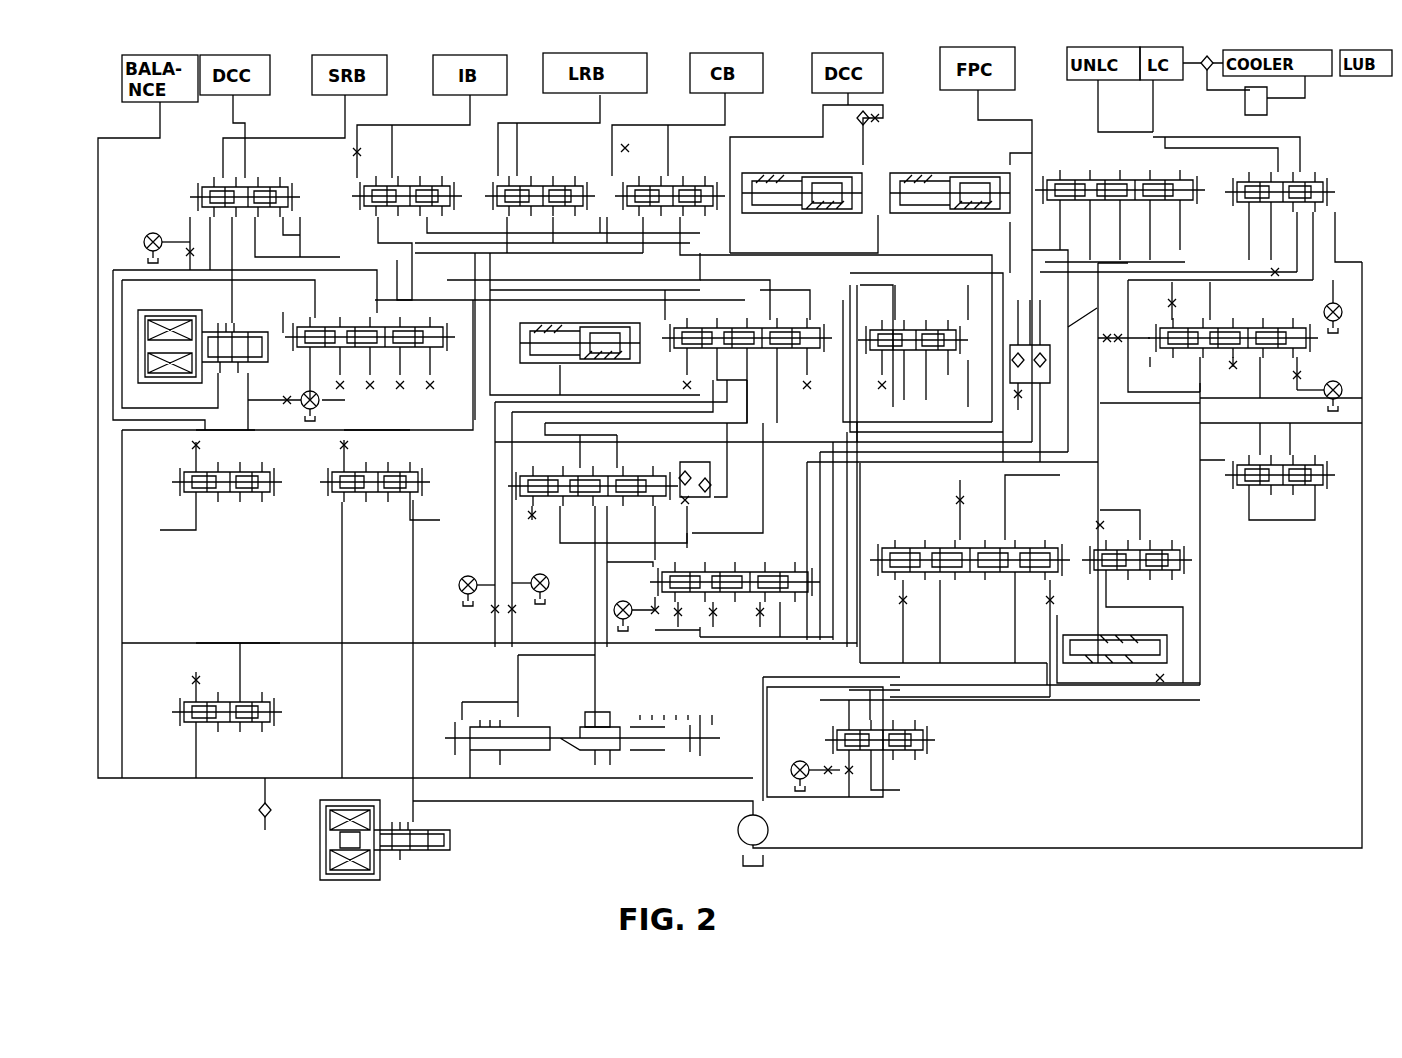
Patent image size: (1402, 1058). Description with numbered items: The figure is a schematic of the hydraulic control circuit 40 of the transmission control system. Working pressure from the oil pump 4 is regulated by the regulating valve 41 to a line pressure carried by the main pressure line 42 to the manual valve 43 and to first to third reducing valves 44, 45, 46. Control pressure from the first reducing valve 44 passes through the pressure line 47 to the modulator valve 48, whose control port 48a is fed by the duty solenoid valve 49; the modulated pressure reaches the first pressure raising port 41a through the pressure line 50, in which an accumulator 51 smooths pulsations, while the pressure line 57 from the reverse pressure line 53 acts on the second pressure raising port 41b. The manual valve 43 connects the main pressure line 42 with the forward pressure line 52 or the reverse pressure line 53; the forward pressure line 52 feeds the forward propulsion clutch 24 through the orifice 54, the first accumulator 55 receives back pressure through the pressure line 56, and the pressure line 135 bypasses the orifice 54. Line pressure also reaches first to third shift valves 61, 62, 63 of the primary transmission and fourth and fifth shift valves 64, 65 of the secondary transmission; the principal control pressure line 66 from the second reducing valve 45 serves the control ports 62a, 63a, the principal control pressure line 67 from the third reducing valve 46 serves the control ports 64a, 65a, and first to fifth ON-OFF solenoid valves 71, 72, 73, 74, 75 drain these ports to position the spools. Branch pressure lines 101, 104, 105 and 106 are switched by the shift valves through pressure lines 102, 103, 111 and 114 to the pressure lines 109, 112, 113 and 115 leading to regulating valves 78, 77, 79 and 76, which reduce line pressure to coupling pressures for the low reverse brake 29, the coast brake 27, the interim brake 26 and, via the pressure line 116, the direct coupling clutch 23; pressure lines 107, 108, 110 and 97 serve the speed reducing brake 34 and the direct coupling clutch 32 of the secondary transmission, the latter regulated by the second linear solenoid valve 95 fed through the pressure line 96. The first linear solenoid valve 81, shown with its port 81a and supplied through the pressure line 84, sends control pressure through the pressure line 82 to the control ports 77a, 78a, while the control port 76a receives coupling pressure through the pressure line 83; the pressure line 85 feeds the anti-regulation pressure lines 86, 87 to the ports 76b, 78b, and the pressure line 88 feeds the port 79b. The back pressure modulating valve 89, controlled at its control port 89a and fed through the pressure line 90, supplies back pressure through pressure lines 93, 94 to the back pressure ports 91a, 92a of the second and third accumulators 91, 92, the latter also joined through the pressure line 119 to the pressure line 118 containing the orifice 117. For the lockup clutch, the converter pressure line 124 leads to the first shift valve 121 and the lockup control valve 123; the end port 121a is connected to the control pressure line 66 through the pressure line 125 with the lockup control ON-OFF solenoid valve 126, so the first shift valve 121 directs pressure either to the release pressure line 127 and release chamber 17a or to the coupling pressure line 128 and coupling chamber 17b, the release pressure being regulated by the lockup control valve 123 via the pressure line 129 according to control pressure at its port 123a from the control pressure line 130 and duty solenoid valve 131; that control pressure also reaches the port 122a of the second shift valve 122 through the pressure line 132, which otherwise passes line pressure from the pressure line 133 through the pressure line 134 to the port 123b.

The oil pump 4 is at (738, 830).
The release chamber 17a is at (1110, 85).
The coupling chamber 17b is at (1165, 85).
The direct coupling clutch 23 is at (883, 83).
The forward propulsion clutch 24 is at (1015, 85).
The interim brake 26 is at (507, 85).
The coast brake 27 is at (763, 83).
The low reverse brake 29 is at (647, 83).
The direct coupling clutch 32 is at (270, 85).
The speed reducing brake 34 is at (387, 85).
The hydraulic control circuit 40 is at (140, 850).
The regulating valve 41 is at (1000, 540).
The first pressure raising port 41a is at (1050, 540).
The second pressure raising port 41b is at (1015, 540).
The main pressure line 42 is at (120, 605).
The manual valve 43 is at (550, 722).
The first reducing valve 44 is at (1150, 550).
The second reducing valve 45 is at (245, 705).
The third reducing valve 46 is at (245, 508).
The pressure line 47 is at (1075, 465).
The modulator valve 48 is at (905, 770).
The control port 48a is at (835, 722).
The duty solenoid valve 49 is at (793, 760).
The pressure line 50 is at (1047, 665).
The accumulator 51 is at (1110, 640).
The forward pressure line 52 is at (1035, 425).
The reverse pressure line 53 is at (600, 710).
The orifice 54 is at (1020, 392).
The first accumulator 55 is at (930, 175).
The pressure line 56 is at (820, 480).
The pressure line 57 is at (955, 665).
The first shift valve 61 is at (765, 565).
The second shift valve 62 is at (650, 468).
The control port 62a is at (532, 510).
The third shift valve 63 is at (795, 360).
The control port 63a is at (680, 352).
The fourth shift valve 64 is at (435, 360).
The control port 64a is at (295, 313).
The fifth shift valve 65 is at (290, 185).
The control port 65a is at (200, 197).
The principal control pressure line 66 is at (372, 643).
The principal control pressure line 67 is at (120, 268).
The first ON-OFF solenoid valve 71 is at (614, 610).
The second ON-OFF solenoid valve 72 is at (552, 578).
The third ON-OFF solenoid valve 73 is at (460, 578).
The fourth ON-OFF solenoid valve 74 is at (318, 410).
The fifth ON-OFF solenoid valve 75 is at (145, 232).
The regulating valve 76 is at (942, 322).
The control port 76a is at (920, 365).
The port 76b is at (955, 365).
The regulating valve 77 is at (673, 176).
The control port 77a is at (705, 188).
The regulating valve 78 is at (563, 176).
The control port 78a is at (560, 186).
The port 78b is at (585, 188).
The regulating valve 79 is at (432, 178).
The port 79b is at (465, 188).
The first linear solenoid valve 81 is at (450, 838).
The regulator valve port 81a is at (655, 600).
The pressure line 82 is at (475, 265).
The pressure line 83 is at (915, 265).
The pressure line 84 is at (625, 801).
The pressure line 85 is at (850, 500).
The anti-regulation pressure line 86 is at (915, 418).
The anti-regulation pressure line 87 is at (598, 290).
The pressure line 88 is at (457, 233).
The back pressure modulating valve 89 is at (380, 505).
The control port 89a is at (420, 500).
The pressure line 90 is at (342, 585).
The second accumulator 91 is at (780, 175).
The back pressure port 91a is at (810, 225).
The third accumulator 92 is at (605, 328).
The back pressure port 92a is at (592, 315).
The pressure line 93 is at (750, 253).
The pressure line 94 is at (570, 253).
The second linear solenoid valve 95 is at (185, 322).
The pressure line 96 is at (230, 385).
The pressure line 97 is at (232, 300).
The pressure line 101 is at (745, 615).
The pressure line 102 is at (625, 545).
The pressure line 103 is at (545, 435).
The pressure line 104 is at (630, 555).
The pressure line 105 is at (700, 615).
The pressure line 106 is at (353, 420).
The pressure line 107 is at (340, 310).
The pressure line 108 is at (305, 138).
The pressure line 109 is at (650, 292).
The pressure line 110 is at (233, 124).
The pressure line 111 is at (763, 512).
The pressure line 112 is at (780, 288).
The pressure line 113 is at (378, 238).
The pressure line 114 is at (715, 528).
The pressure line 115 is at (830, 408).
The pressure line 116 is at (845, 255).
The orifice 117 is at (712, 482).
The pressure line 118 is at (735, 460).
The pressure line 119 is at (580, 395).
The first shift valve 121 is at (1260, 205).
The end port 121a is at (1318, 178).
The second shift valve 122 is at (1160, 180).
The port 122a is at (1200, 182).
The lockup control valve 123 is at (1250, 320).
The port 123a is at (1295, 345).
The port 123b is at (1150, 367).
The converter pressure line 124 is at (1345, 255).
The pressure line 125 is at (1268, 272).
The lockup control ON-OFF solenoid valve 126 is at (1322, 312).
The release pressure line 127 is at (1285, 132).
The coupling pressure line 128 is at (1210, 148).
The pressure line 129 is at (1240, 272).
The control pressure line 130 is at (1135, 405).
The duty solenoid valve 131 is at (1318, 400).
The pressure line 132 is at (1068, 327).
The pressure line 133 is at (1060, 235).
The pressure line 134 is at (1155, 312).
The pressure line 135 is at (1080, 300).